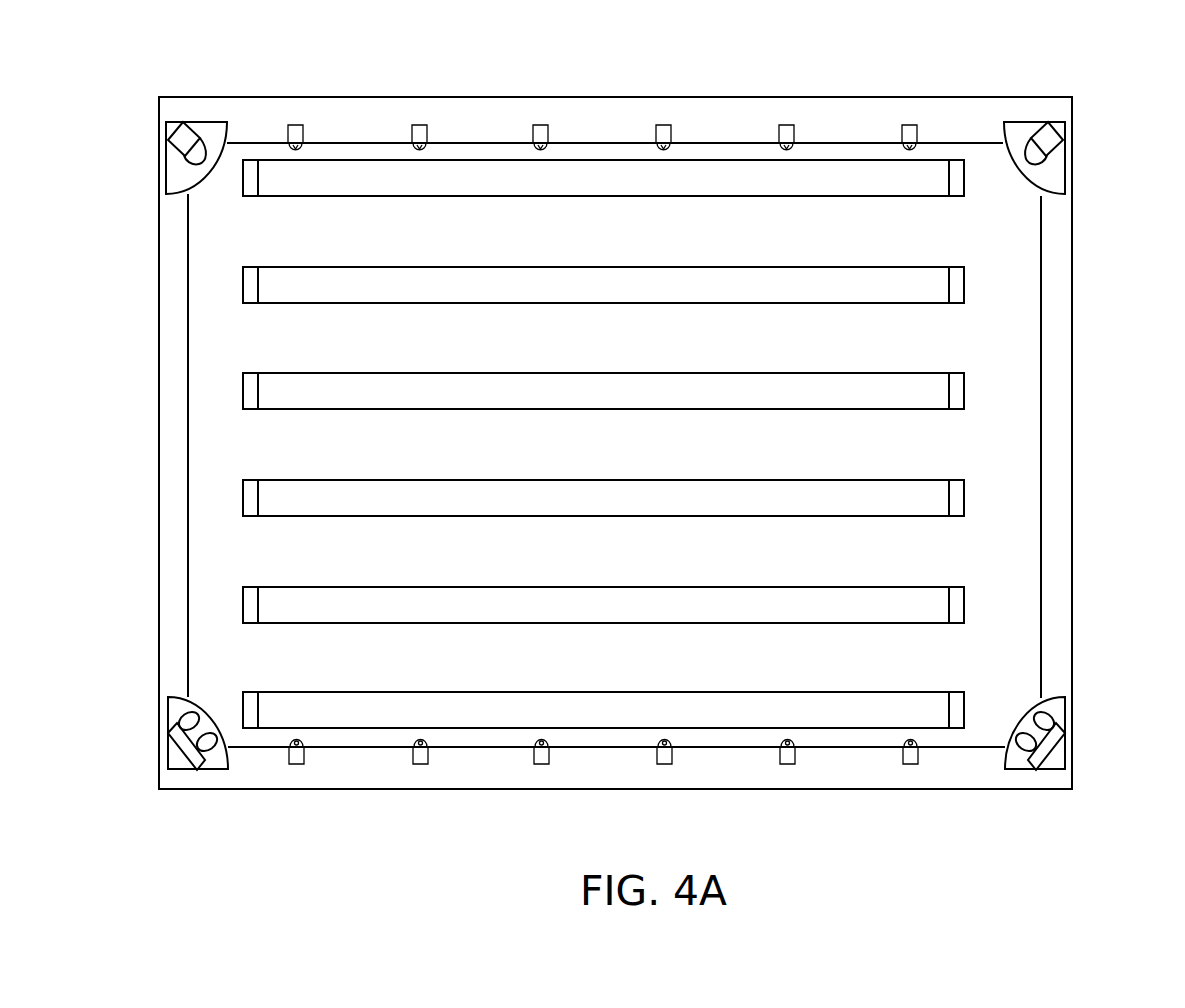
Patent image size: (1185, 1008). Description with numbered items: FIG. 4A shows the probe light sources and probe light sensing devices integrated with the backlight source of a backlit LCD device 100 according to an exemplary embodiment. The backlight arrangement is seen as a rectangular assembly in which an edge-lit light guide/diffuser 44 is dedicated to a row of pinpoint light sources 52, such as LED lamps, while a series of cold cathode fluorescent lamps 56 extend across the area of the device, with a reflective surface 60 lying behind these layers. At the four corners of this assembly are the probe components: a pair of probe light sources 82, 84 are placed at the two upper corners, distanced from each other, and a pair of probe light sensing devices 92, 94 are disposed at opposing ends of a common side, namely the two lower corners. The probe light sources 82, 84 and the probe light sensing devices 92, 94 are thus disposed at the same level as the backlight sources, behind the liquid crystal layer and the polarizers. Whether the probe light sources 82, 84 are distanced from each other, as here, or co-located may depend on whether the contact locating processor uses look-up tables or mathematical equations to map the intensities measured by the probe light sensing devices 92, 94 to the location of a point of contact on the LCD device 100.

The LCD device 100 is at (90, 51).
The edge-lit light guide/diffuser 44 is at (999, 421).
The pinpoint light sources 52 is at (533, 144).
The cold cathode fluorescent lamps 56 is at (784, 285).
The reflective surface 60 is at (868, 773).
The probe light source 82 is at (177, 150).
The probe light source 84 is at (1055, 142).
The probe light sensing device 92 is at (178, 747).
The probe light sensing device 94 is at (1052, 750).